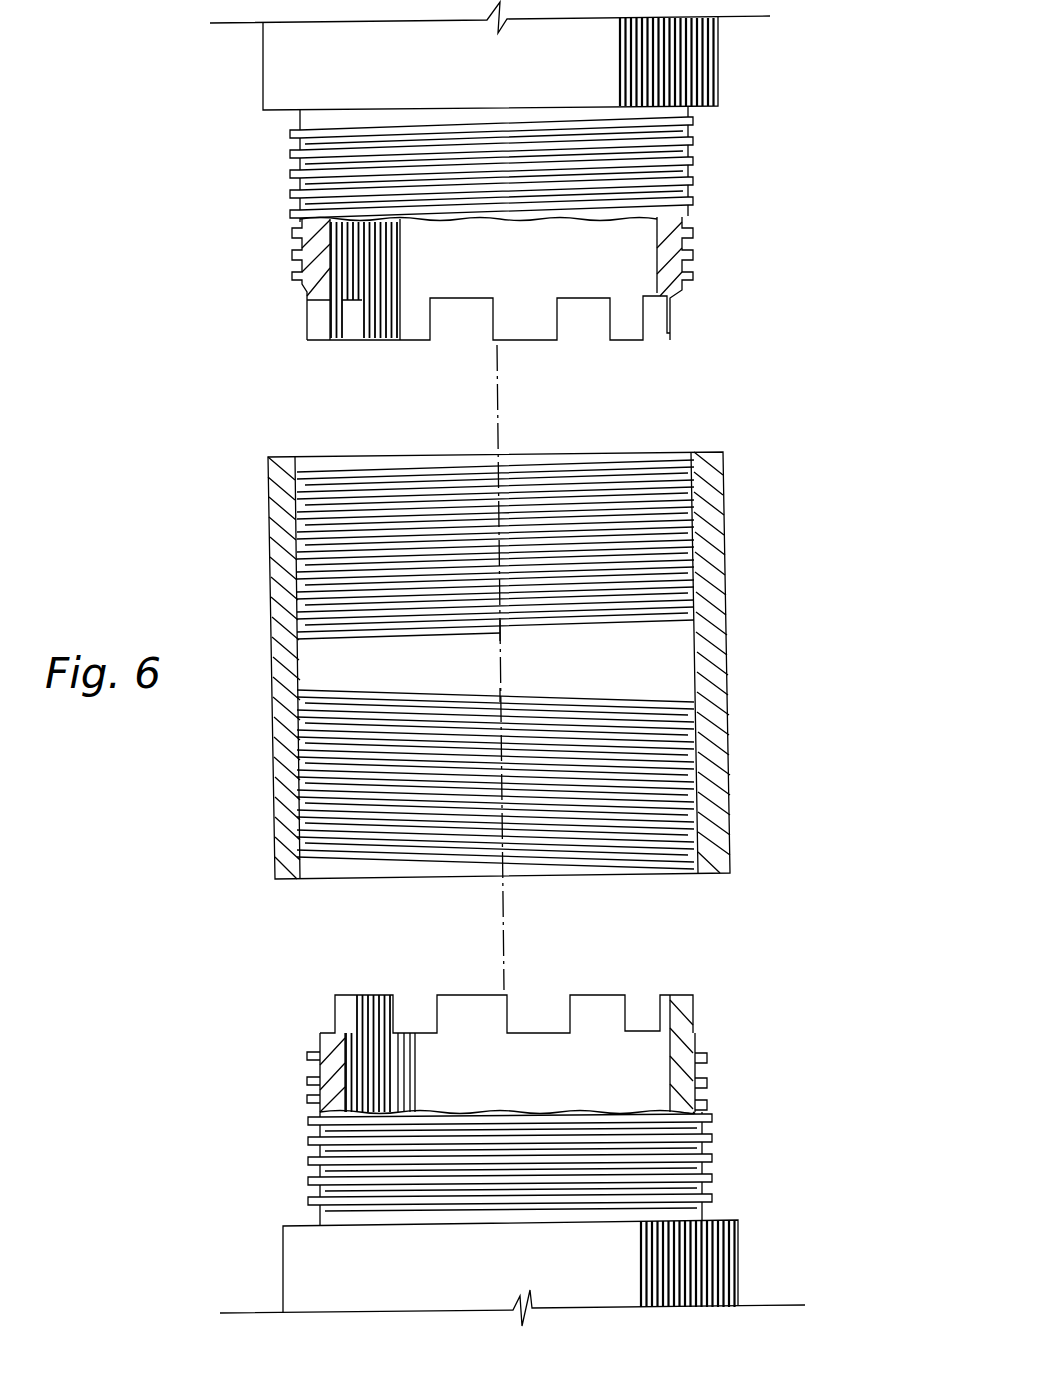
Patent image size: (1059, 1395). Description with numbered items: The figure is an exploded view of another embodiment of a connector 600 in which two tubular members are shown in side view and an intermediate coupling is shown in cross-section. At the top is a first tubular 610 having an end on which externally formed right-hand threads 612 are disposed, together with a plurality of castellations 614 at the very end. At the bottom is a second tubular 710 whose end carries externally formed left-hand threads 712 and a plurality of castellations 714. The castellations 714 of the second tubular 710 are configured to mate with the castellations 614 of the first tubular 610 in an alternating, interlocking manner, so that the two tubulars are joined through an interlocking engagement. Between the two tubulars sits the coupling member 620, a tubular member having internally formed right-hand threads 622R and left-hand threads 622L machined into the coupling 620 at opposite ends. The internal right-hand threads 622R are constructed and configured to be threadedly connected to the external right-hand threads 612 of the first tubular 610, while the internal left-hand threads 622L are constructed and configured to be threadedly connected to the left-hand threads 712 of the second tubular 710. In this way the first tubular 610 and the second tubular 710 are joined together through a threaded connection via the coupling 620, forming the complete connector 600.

The connector 600 is at (160, 168).
The first tubular 610 is at (728, 73).
The right-hand threads 612 is at (693, 216).
The castellations 614 is at (632, 342).
The coupling member 620 is at (736, 655).
The internal right-hand threads 622R is at (697, 550).
The internal left-hand threads 622L is at (700, 778).
The second tubular 710 is at (750, 1245).
The left-hand threads 712 is at (712, 1162).
The castellations 714 is at (601, 993).